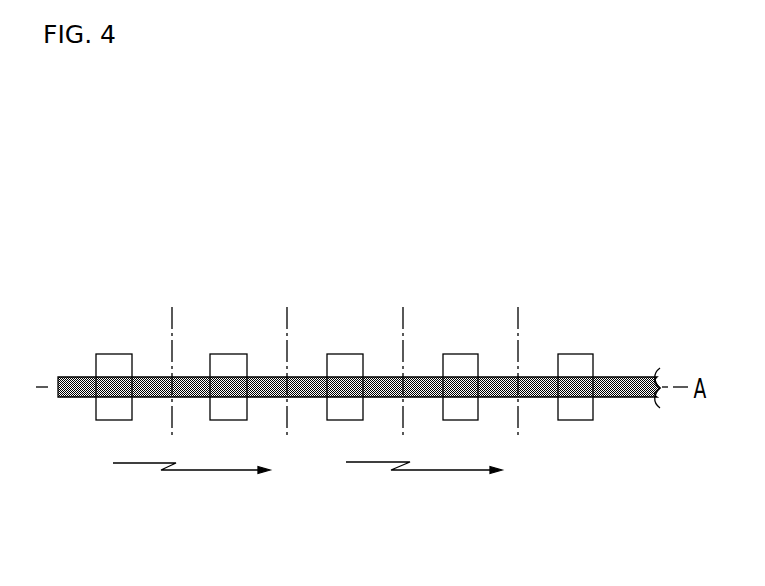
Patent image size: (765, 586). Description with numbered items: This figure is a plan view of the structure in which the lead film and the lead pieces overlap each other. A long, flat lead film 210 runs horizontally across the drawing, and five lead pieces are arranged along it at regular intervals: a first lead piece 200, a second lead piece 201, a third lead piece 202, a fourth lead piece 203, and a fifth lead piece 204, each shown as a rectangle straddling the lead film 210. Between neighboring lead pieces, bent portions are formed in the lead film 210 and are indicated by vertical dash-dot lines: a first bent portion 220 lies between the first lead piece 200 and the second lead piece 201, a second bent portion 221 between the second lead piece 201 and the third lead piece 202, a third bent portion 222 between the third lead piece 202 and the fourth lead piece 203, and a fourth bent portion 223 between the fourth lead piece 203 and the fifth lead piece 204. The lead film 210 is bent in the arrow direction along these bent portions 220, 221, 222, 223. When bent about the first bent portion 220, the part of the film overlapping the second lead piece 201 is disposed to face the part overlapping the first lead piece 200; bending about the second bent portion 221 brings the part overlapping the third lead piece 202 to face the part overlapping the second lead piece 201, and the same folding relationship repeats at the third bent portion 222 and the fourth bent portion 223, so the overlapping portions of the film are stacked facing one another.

The first lead piece 200 is at (103, 358).
The second lead piece 201 is at (224, 358).
The third lead piece 202 is at (340, 358).
The fourth lead piece 203 is at (459, 358).
The fifth lead piece 204 is at (584, 358).
The lead film 210 is at (65, 377).
The first bent portion 220 is at (172, 358).
The second bent portion 221 is at (286, 358).
The third bent portion 222 is at (402, 358).
The fourth bent portion 223 is at (518, 358).